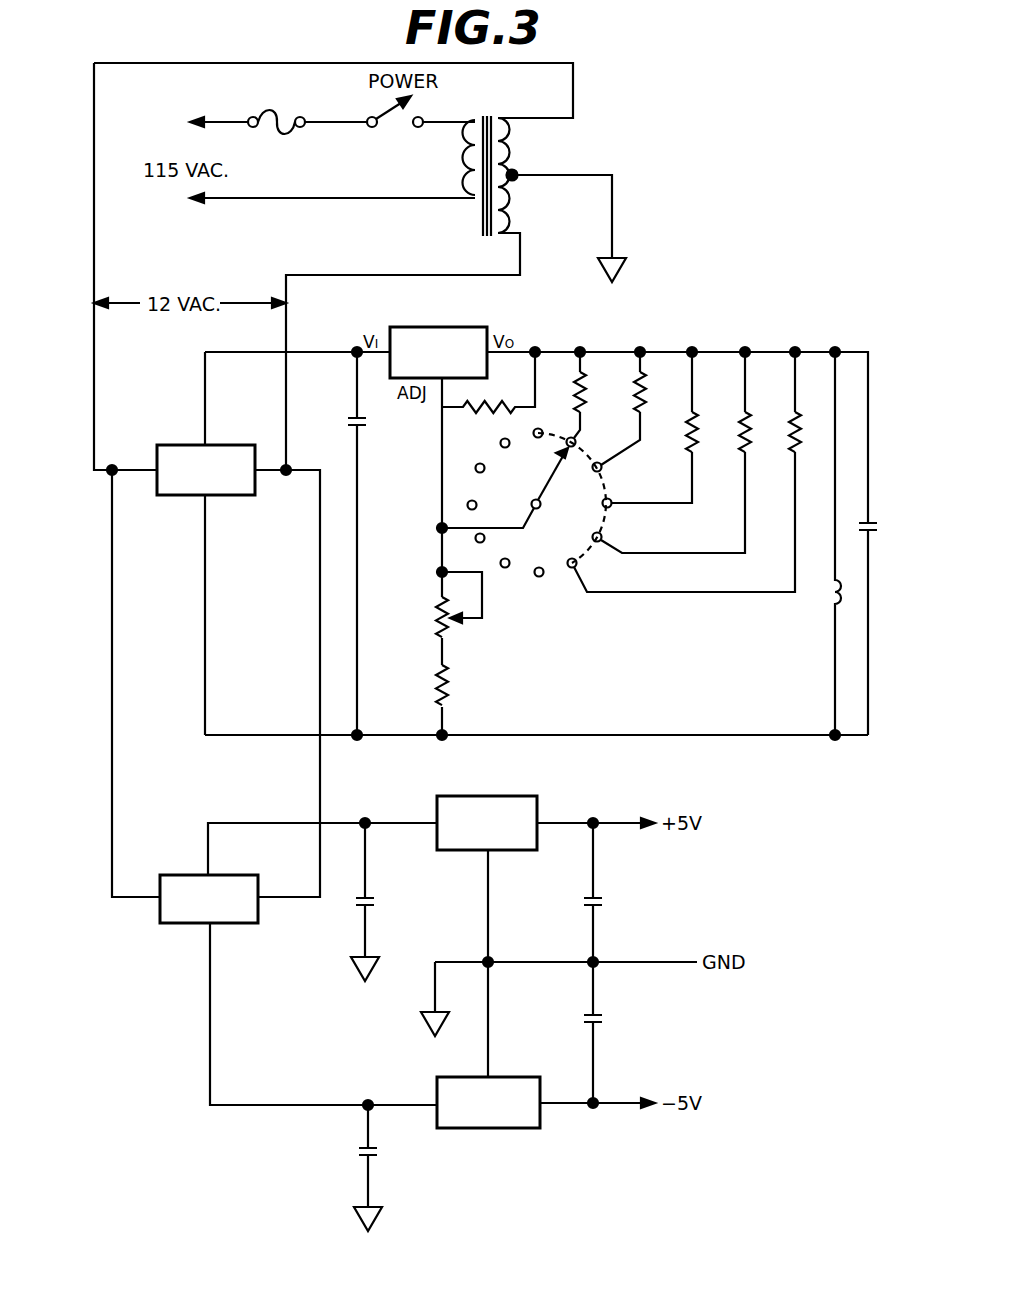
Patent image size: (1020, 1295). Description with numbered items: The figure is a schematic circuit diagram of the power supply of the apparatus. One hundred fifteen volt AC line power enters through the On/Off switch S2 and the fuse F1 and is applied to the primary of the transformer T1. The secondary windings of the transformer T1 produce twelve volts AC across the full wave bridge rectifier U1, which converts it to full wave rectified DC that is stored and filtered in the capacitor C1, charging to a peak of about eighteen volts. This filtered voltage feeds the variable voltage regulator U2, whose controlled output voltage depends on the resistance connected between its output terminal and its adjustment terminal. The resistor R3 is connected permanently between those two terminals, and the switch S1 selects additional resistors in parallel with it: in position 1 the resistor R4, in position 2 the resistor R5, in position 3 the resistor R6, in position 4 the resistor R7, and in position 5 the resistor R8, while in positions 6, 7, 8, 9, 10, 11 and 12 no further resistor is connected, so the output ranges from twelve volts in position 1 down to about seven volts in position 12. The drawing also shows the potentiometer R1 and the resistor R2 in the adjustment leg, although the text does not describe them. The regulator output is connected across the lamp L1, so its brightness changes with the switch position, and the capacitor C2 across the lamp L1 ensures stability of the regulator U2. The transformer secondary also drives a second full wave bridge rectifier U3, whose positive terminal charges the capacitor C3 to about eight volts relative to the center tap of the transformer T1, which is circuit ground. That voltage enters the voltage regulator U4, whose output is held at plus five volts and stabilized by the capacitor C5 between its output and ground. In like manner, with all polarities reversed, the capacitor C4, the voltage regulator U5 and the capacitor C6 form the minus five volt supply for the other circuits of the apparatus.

The fuse F1 is at (276, 130).
The On/Off switch S2 is at (395, 123).
The transformer T1 is at (545, 189).
The full wave bridge rectifier U1 is at (207, 474).
The variable voltage regulator U2 is at (438, 352).
The full wave bridge rectifier U3 is at (210, 900).
The voltage regulator U4 is at (496, 834).
The voltage regulator U5 is at (498, 1091).
The capacitor C1 is at (344, 543).
The capacitor C2 is at (859, 515).
The capacitor C3 is at (378, 902).
The capacitor C4 is at (354, 1168).
The capacitor C5 is at (579, 892).
The capacitor C6 is at (579, 1032).
The adjustment potentiometer R1 is at (446, 604).
The resistor R2 is at (429, 685).
The resistor R3 is at (488, 382).
The resistor R4 is at (567, 395).
The resistor R5 is at (623, 408).
The resistor R6 is at (655, 427).
The resistor R7 is at (676, 452).
The resistor R8 is at (687, 472).
The switch S1 is at (532, 503).
The lamp L1 is at (851, 543).
The switch position 1 is at (571, 431).
The switch position 2 is at (601, 459).
The switch position 3 is at (612, 495).
The switch position 4 is at (604, 533).
The switch position 5 is at (582, 566).
The switch position 6 is at (545, 582).
The switch position 7 is at (510, 574).
The switch position 8 is at (485, 549).
The switch position 9 is at (466, 513).
The switch position 10 is at (468, 472).
The switch position 11 is at (494, 444).
The switch position 12 is at (530, 425).